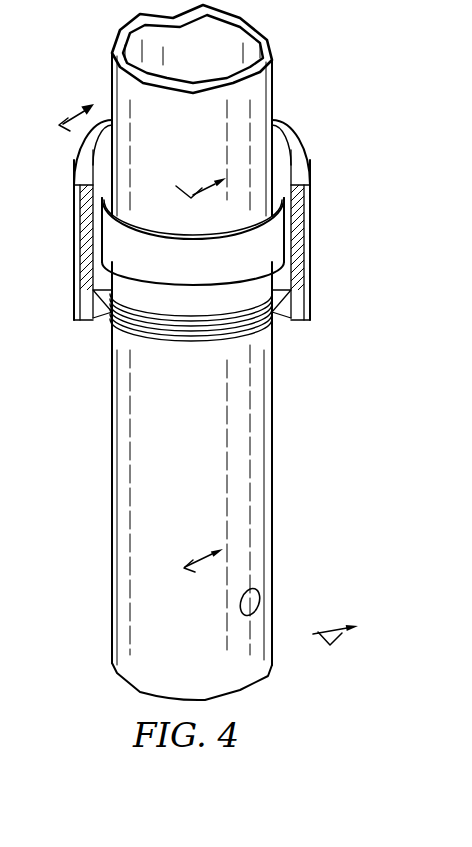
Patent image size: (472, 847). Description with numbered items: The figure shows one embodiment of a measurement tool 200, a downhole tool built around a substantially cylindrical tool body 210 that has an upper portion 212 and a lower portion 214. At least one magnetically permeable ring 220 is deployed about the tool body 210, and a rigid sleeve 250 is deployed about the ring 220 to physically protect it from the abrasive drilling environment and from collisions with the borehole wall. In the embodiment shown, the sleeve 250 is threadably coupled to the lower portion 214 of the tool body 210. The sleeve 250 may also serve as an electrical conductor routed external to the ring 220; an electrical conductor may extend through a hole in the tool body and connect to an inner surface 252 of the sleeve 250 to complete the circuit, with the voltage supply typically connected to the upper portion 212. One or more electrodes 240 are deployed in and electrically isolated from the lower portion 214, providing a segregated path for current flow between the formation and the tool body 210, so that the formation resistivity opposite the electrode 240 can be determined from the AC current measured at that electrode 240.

The measurement tool 200 is at (348, 226).
The tool body 210 is at (123, 447).
The upper portion of the tool body 212 is at (110, 72).
The lower portion of the tool body 214 is at (272, 446).
The magnetically permeable ring 220 is at (182, 265).
The electrode 240 is at (268, 606).
The rigid sleeve 250 is at (310, 300).
The inner surface of sleeve 252 is at (286, 152).